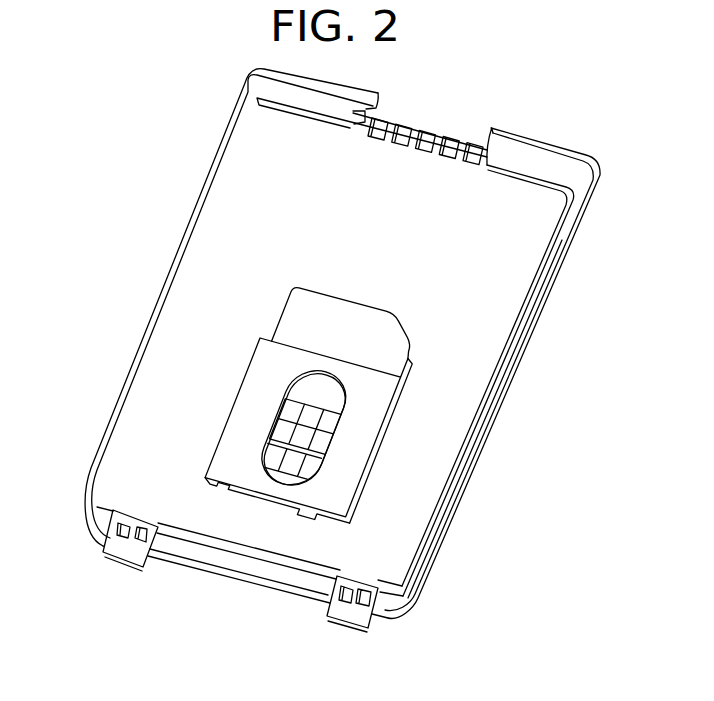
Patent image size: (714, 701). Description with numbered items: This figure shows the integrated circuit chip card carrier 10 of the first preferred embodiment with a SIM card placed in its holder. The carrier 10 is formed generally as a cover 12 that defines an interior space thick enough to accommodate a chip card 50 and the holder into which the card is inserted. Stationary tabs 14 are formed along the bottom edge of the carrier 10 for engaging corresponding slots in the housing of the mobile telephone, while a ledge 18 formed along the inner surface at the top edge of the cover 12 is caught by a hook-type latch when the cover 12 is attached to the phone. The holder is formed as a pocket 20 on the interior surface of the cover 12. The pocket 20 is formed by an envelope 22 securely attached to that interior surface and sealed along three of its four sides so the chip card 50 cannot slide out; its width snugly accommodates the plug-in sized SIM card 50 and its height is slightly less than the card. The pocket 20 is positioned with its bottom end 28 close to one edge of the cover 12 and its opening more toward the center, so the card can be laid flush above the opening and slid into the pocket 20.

The integrated circuit chip card carrier 10 is at (141, 183).
The cover 12 is at (523, 240).
The stationary tabs 14 is at (120, 560).
The ledge 18 is at (452, 137).
The pocket 20 is at (205, 415).
The envelope 22 is at (363, 413).
The bottom end 28 is at (268, 513).
The chip card 50 is at (386, 284).